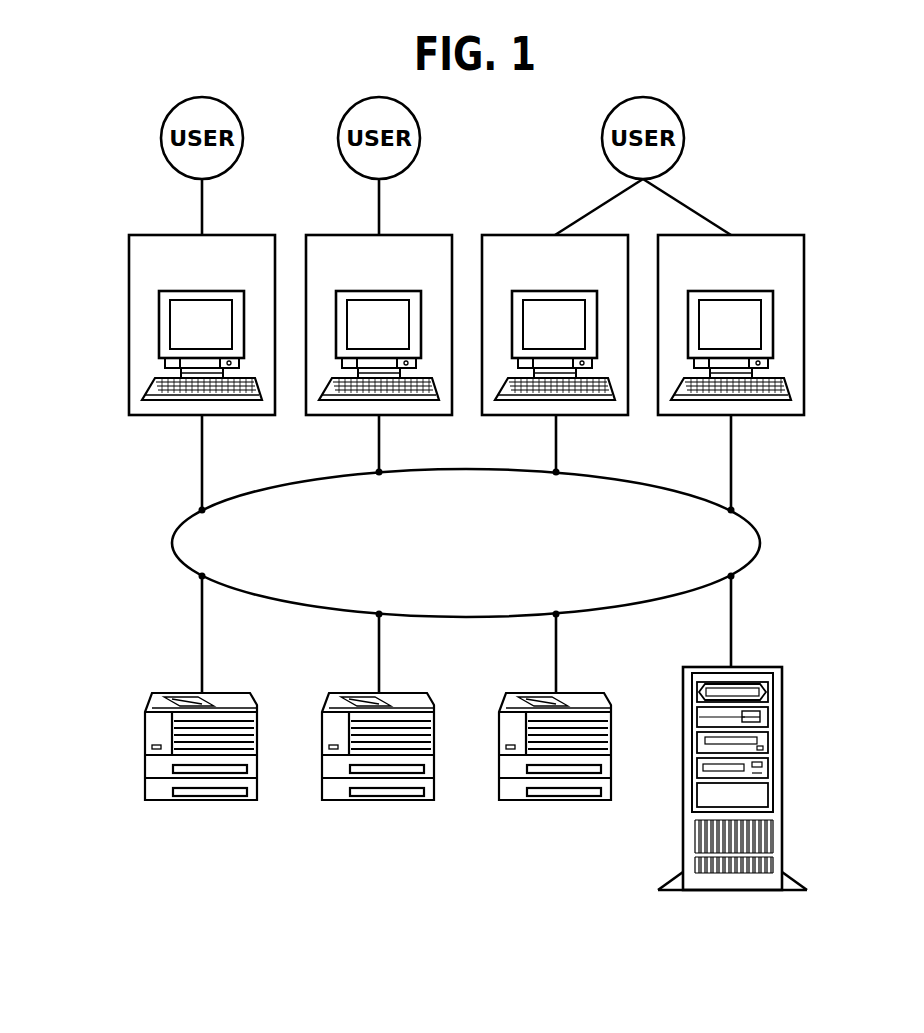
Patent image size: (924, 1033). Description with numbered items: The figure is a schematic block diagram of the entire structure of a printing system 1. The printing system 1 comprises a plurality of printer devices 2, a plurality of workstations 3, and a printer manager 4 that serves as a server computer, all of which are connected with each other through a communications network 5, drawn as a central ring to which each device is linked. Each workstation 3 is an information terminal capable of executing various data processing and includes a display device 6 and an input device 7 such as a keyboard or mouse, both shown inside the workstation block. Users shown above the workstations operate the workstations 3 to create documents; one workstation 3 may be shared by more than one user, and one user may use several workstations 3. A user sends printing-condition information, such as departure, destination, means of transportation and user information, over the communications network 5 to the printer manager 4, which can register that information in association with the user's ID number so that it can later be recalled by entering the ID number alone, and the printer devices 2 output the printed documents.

The printing system 1 is at (743, 146).
The printer device 2 is at (202, 800).
The workstation 3 is at (143, 235).
The printer manager 4 is at (782, 770).
The communications network 5 is at (762, 542).
The display device 6 is at (178, 322).
The input device 7 is at (170, 384).